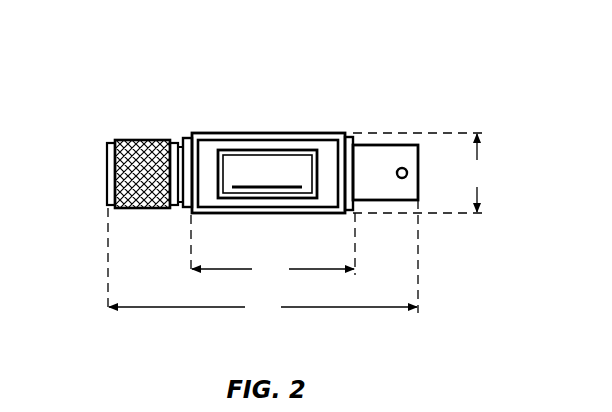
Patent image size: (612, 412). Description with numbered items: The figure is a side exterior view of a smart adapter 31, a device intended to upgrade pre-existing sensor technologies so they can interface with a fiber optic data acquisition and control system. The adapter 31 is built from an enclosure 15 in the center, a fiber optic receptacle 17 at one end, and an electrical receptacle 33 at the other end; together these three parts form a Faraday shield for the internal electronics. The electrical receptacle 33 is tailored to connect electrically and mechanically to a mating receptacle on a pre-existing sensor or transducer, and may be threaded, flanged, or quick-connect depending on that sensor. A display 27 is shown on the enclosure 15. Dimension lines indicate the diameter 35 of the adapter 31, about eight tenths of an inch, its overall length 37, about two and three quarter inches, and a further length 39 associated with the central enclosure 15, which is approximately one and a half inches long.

The adapter 31 is at (140, 52).
The electrical receptacle 33 is at (100, 138).
The enclosure 15 is at (202, 137).
The display 27 is at (275, 157).
The fiber optic receptacle 17 is at (393, 144).
The diameter 35 is at (420, 173).
The length 37 is at (263, 258).
The body length dimension 39 is at (273, 246).